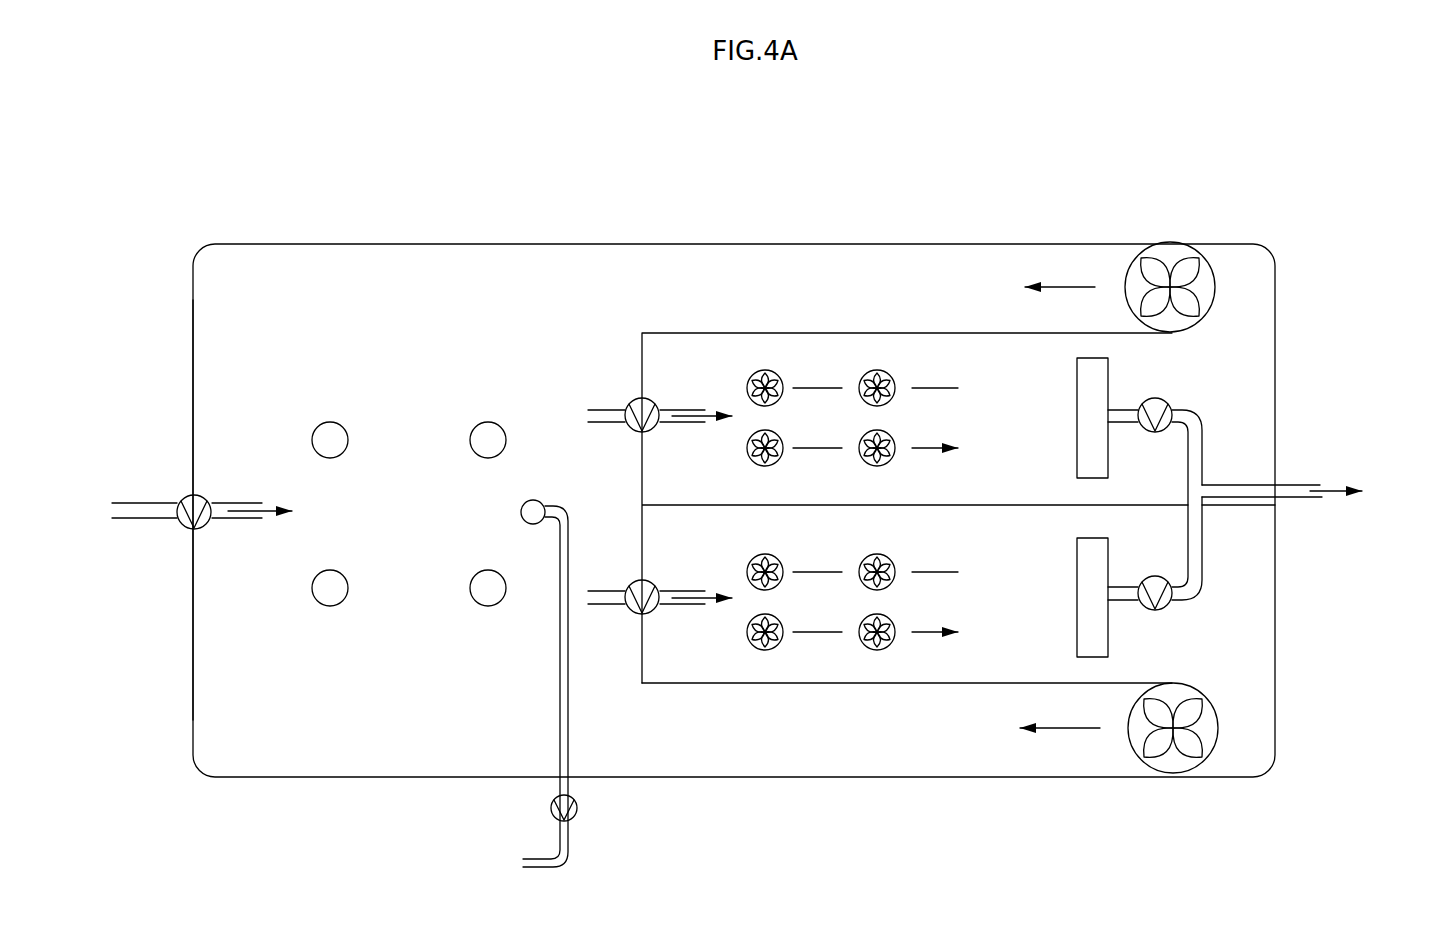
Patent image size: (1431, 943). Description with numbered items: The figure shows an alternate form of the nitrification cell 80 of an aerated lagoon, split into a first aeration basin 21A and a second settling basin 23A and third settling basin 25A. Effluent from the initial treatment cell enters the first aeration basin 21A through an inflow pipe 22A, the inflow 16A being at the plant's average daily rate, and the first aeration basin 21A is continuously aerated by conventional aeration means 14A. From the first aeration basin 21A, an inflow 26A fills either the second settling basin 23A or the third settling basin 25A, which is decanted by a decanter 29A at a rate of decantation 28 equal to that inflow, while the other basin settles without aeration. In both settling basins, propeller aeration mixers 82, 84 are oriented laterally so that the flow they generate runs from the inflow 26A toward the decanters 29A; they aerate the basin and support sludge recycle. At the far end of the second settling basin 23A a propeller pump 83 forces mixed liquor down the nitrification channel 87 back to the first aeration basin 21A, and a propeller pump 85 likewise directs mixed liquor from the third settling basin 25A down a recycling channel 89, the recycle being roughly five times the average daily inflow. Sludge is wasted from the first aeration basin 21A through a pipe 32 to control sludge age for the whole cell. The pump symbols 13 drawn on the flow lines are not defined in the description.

The nitrification cell 80 is at (407, 217).
The pump 13 is at (631, 583).
The aeration means 14A is at (478, 605).
The inflow 16A is at (262, 507).
The first aeration basin 21A is at (235, 615).
The inflow pipe 22A is at (148, 503).
The second settling basin 23A is at (978, 368).
The third settling basin 25A is at (1010, 642).
The inflow 26A is at (707, 410).
The decantation 28 is at (1335, 487).
The decanter 29A is at (1077, 442).
The pipe 32 is at (540, 858).
The propeller aeration mixers 82 is at (862, 434).
The propeller pump 83 is at (1202, 255).
The propeller aeration mixers 84 is at (872, 652).
The propeller pump 85 is at (1205, 758).
The nitrification channel 87 is at (852, 287).
The recycling channel 89 is at (855, 740).